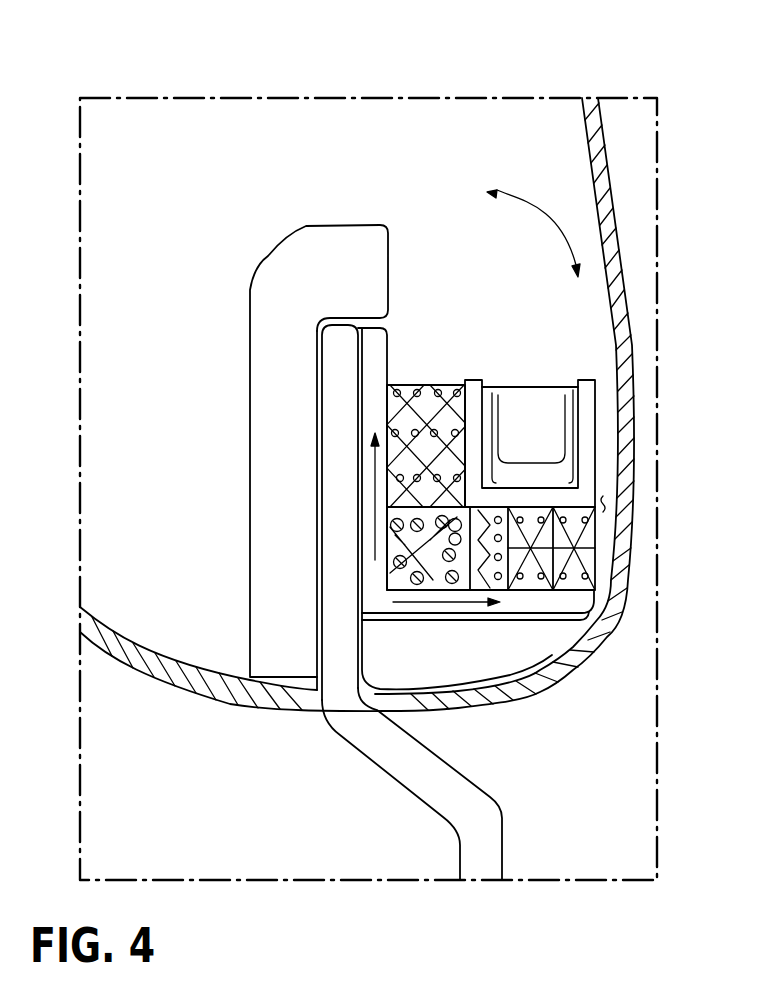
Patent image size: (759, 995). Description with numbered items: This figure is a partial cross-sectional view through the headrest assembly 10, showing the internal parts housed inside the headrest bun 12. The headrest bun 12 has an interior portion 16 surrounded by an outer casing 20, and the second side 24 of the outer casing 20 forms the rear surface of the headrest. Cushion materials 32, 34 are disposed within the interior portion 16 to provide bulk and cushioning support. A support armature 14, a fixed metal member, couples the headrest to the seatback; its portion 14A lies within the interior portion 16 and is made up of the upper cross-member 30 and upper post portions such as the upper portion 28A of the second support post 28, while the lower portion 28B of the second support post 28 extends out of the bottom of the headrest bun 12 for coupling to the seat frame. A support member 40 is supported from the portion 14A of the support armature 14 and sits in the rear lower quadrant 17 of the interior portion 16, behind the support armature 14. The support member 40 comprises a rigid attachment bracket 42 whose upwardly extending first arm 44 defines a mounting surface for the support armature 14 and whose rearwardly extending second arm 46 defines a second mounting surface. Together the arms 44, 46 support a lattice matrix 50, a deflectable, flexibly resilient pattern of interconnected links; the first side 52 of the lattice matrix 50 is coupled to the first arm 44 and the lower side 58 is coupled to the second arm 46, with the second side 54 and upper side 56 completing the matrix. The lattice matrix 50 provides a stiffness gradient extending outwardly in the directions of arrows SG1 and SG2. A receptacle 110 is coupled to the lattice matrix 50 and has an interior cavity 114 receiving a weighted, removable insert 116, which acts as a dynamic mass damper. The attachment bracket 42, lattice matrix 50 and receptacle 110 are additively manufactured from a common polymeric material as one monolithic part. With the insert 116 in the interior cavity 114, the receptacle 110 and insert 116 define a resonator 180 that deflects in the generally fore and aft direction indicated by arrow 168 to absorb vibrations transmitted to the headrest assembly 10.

The headrest assembly 10 is at (620, 87).
The headrest bun 12 is at (640, 138).
The support armature 14 is at (537, 798).
The portion of the support armature 14A is at (314, 530).
The interior portion 16 is at (172, 208).
The rear lower quadrant 17 is at (606, 497).
The outer casing 20 is at (633, 190).
The second side 24 is at (620, 243).
The second support post 28 is at (441, 851).
The upper portion of the second support post 28A is at (333, 628).
The lower portion of the second support post 28B is at (490, 843).
The upper cross-member 30 is at (342, 332).
The cushion material 32 is at (298, 265).
The cushion material 34 is at (563, 590).
The support member 40 is at (522, 358).
The attachment bracket 42 is at (397, 308).
The first arm 44 is at (380, 356).
The second arm 46 is at (523, 603).
The lattice matrix 50 is at (451, 370).
The first side 52 is at (385, 558).
The second side 54 is at (593, 560).
The upper side 56 is at (400, 383).
The lower side 58 is at (550, 638).
The receptacle 110 is at (608, 412).
The interior cavity 114 is at (536, 435).
The insert 116 is at (545, 380).
The arrow 168 is at (548, 212).
The resonator 180 is at (612, 482).
The arrow SG1 is at (385, 517).
The arrow SG2 is at (438, 600).